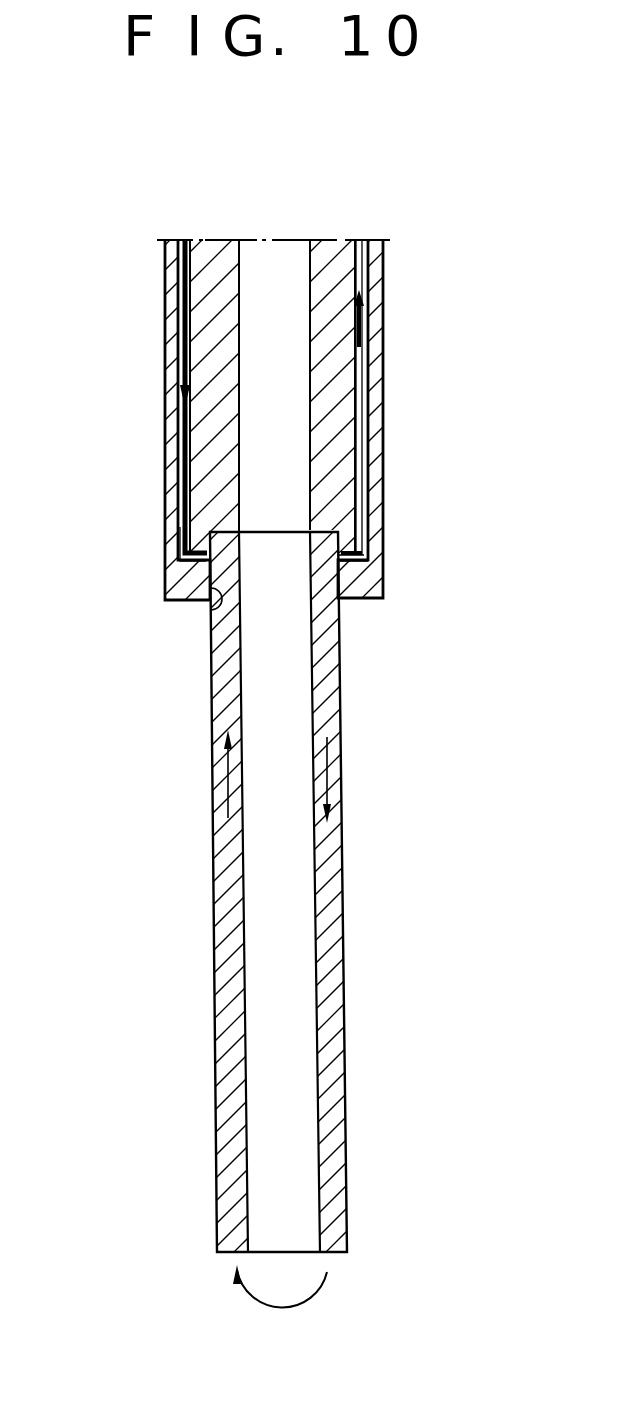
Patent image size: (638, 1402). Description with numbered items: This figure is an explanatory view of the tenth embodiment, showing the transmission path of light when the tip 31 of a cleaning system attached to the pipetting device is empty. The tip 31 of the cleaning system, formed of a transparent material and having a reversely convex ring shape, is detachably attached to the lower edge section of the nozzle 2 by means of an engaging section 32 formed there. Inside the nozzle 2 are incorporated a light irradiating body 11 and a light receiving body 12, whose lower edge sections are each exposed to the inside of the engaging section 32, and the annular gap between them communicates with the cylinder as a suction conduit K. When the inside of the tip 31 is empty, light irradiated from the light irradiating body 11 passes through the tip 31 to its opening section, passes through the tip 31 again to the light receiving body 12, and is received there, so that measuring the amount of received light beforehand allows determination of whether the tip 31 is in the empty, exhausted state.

The nozzle 2 is at (168, 303).
The light receiving body 12 is at (173, 417).
The light irradiating body 11 is at (370, 432).
The suction conduit K is at (287, 362).
The tip of a cleaning system 31 is at (342, 777).
The engaging section 32 is at (221, 606).